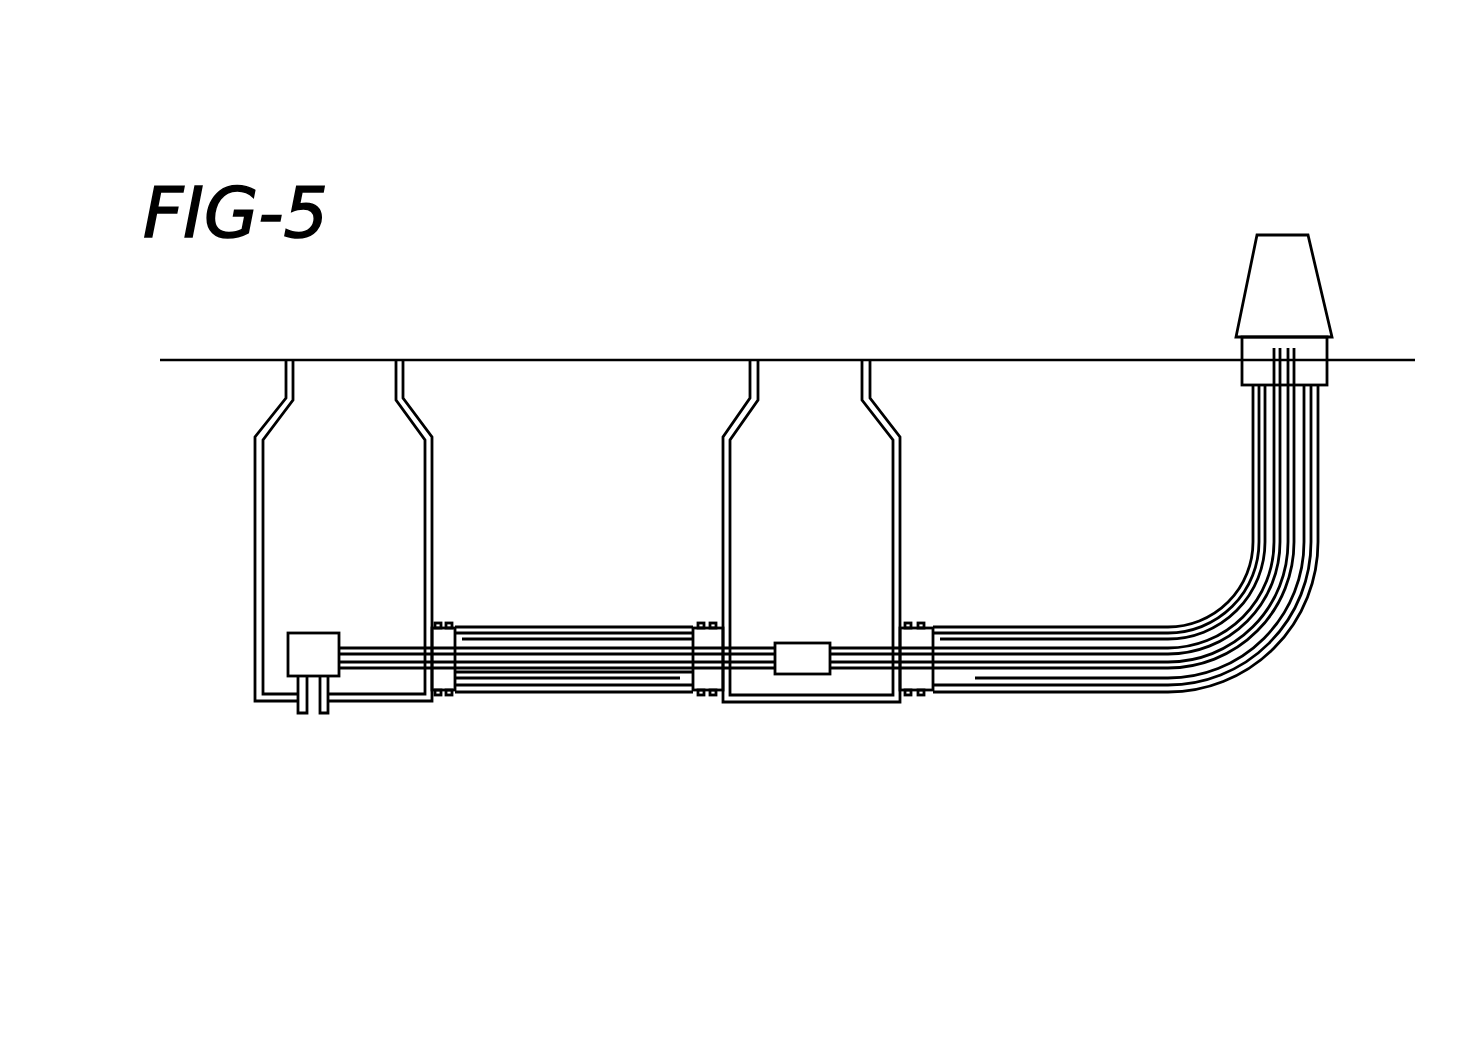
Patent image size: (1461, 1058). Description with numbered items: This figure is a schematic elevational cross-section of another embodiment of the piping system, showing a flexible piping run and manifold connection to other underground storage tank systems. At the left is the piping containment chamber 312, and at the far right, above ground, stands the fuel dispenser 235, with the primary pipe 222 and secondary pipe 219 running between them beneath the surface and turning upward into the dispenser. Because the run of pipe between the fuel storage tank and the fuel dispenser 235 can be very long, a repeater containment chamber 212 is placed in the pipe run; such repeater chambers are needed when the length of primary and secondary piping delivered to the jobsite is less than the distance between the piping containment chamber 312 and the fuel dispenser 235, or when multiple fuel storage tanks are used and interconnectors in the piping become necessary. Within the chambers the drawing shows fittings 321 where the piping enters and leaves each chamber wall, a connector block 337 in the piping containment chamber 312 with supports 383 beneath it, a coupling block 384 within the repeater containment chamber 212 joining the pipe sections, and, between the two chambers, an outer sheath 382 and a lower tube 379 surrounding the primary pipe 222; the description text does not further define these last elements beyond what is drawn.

The repeater containment chamber 212 is at (900, 470).
The secondary pipe 219 is at (1215, 690).
The primary pipe 222 is at (1076, 660).
The fuel dispenser 235 is at (1322, 270).
The piping containment chamber 312 is at (432, 470).
The fittings 321 is at (470, 628).
The connector block 337 is at (305, 633).
The lower tube 379 is at (562, 693).
The sheath tube 382 is at (573, 628).
The legs / supports 383 is at (303, 712).
The coupling block 384 is at (805, 675).